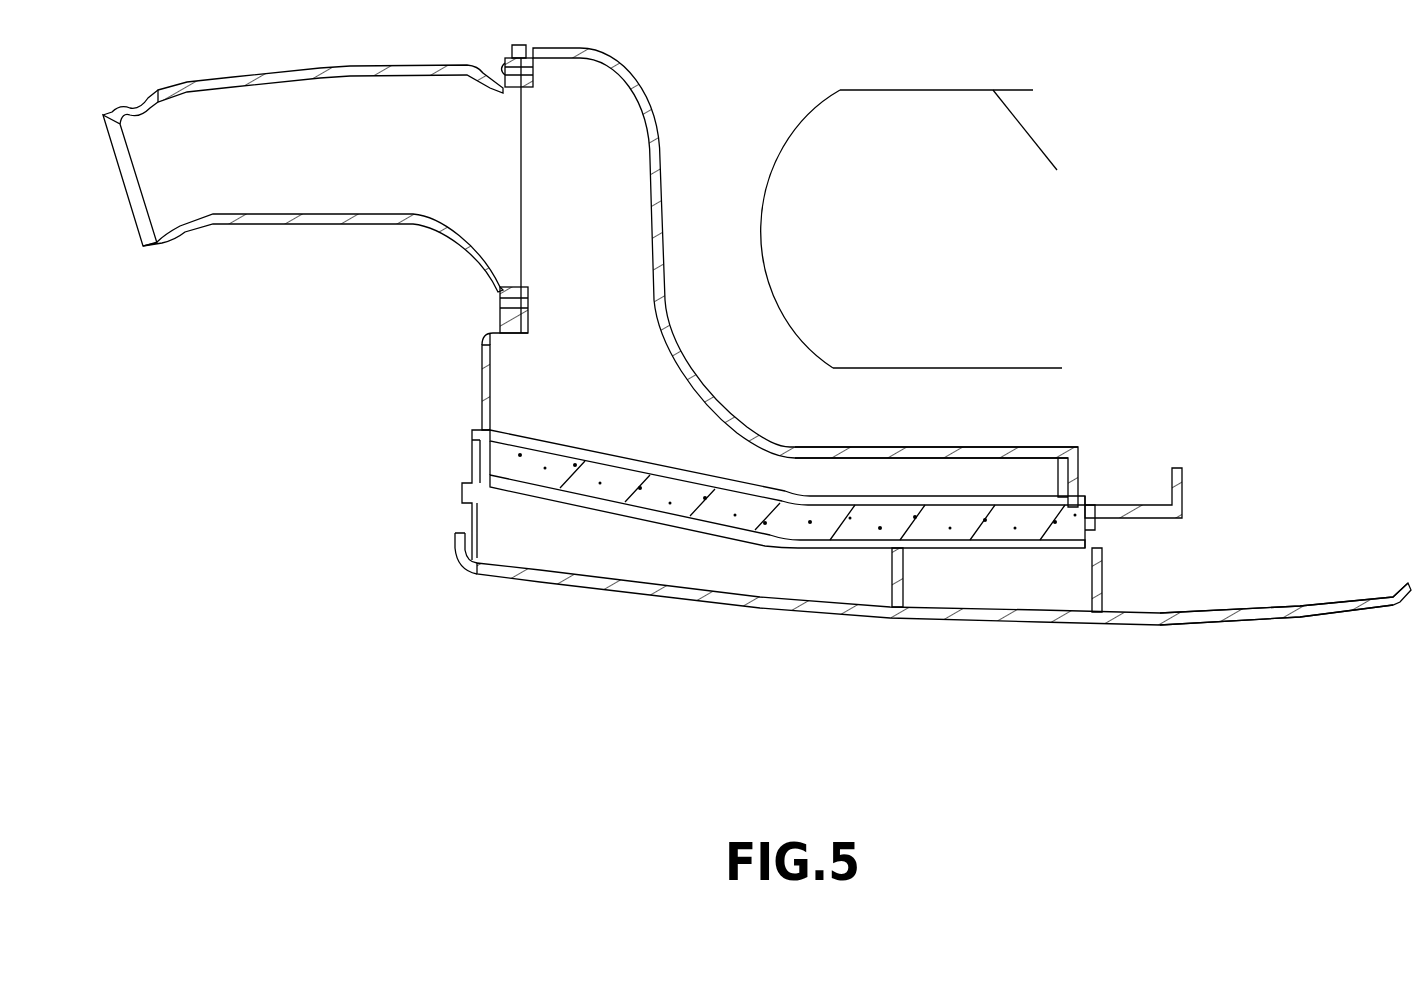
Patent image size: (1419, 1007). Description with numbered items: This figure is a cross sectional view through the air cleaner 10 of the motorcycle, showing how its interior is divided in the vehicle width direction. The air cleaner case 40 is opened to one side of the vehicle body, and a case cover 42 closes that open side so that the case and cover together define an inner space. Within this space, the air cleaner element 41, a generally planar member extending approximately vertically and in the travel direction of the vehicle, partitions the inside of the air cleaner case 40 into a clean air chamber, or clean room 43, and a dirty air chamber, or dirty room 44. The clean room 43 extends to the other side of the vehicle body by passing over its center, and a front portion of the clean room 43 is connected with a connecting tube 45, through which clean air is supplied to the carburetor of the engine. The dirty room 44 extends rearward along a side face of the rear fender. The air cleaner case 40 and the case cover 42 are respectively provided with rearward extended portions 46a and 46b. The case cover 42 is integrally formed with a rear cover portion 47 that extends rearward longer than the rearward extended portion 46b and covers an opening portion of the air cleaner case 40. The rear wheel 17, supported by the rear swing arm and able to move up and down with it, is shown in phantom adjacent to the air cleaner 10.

The air cleaner 10 is at (835, 328).
The rear wheel 17 is at (1043, 147).
The air cleaner case 40 is at (678, 352).
The air cleaner element 41 is at (500, 470).
The case cover 42 is at (667, 595).
The clean room 43 is at (603, 318).
The dirty room 44 is at (597, 548).
The connecting tube 45 is at (290, 200).
The rearward extended portion 46a is at (903, 450).
The rearward extended portion 46b is at (977, 622).
The rear cover portion 47 is at (1218, 622).